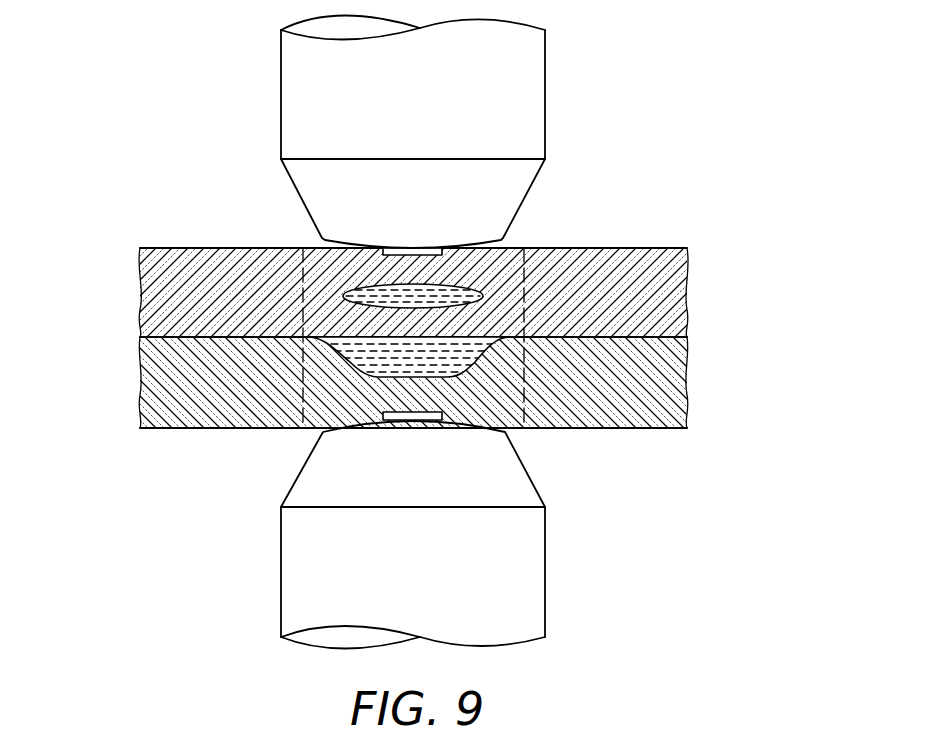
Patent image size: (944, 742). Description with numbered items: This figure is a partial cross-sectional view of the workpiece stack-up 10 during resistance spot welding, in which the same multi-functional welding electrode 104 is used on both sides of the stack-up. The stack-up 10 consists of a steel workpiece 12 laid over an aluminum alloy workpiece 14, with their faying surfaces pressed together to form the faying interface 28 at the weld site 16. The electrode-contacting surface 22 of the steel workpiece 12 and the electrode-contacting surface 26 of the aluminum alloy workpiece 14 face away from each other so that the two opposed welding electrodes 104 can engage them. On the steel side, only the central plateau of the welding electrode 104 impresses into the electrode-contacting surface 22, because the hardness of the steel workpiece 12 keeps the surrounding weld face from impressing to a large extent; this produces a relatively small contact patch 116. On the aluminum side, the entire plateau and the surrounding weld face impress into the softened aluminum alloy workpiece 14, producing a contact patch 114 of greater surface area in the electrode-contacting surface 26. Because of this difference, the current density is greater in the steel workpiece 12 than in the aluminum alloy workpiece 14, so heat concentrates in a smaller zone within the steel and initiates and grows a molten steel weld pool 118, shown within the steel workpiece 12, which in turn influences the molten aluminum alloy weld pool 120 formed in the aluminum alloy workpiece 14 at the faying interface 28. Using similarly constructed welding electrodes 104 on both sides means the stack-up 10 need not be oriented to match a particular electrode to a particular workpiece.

The workpiece stack-up 10 is at (140, 298).
The steel workpiece 12 is at (663, 297).
The aluminum alloy workpiece 14 is at (665, 380).
The weld site 16 is at (526, 290).
The electrode-contacting surface 22 is at (212, 248).
The electrode-contacting surface 26 is at (195, 428).
The faying interface 28 is at (207, 337).
The welding electrode 104 is at (546, 70).
The contact patch 114 is at (352, 428).
The contact patch 116 is at (404, 254).
The molten steel weld pool 118 is at (466, 298).
The molten aluminum alloy weld pool 120 is at (518, 362).